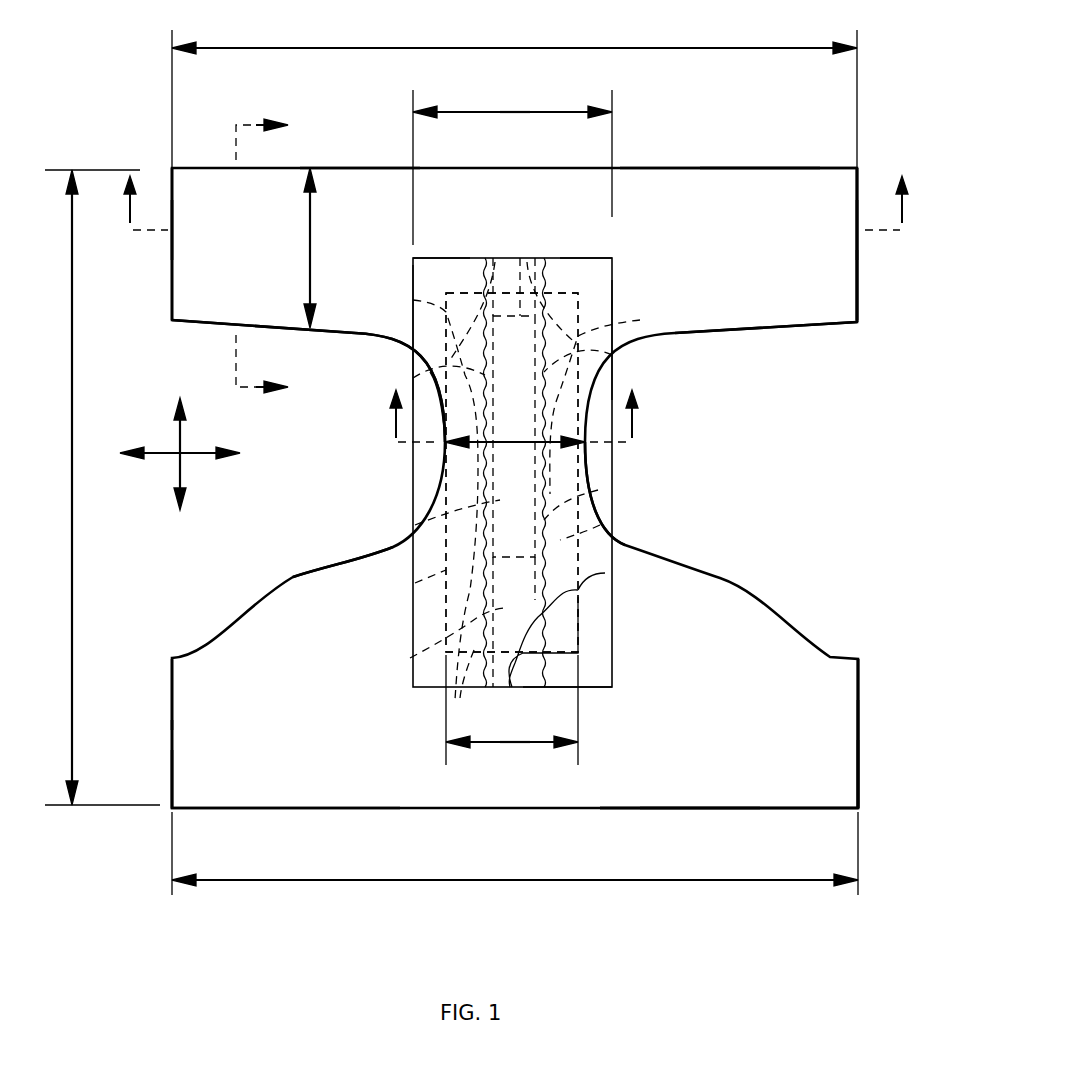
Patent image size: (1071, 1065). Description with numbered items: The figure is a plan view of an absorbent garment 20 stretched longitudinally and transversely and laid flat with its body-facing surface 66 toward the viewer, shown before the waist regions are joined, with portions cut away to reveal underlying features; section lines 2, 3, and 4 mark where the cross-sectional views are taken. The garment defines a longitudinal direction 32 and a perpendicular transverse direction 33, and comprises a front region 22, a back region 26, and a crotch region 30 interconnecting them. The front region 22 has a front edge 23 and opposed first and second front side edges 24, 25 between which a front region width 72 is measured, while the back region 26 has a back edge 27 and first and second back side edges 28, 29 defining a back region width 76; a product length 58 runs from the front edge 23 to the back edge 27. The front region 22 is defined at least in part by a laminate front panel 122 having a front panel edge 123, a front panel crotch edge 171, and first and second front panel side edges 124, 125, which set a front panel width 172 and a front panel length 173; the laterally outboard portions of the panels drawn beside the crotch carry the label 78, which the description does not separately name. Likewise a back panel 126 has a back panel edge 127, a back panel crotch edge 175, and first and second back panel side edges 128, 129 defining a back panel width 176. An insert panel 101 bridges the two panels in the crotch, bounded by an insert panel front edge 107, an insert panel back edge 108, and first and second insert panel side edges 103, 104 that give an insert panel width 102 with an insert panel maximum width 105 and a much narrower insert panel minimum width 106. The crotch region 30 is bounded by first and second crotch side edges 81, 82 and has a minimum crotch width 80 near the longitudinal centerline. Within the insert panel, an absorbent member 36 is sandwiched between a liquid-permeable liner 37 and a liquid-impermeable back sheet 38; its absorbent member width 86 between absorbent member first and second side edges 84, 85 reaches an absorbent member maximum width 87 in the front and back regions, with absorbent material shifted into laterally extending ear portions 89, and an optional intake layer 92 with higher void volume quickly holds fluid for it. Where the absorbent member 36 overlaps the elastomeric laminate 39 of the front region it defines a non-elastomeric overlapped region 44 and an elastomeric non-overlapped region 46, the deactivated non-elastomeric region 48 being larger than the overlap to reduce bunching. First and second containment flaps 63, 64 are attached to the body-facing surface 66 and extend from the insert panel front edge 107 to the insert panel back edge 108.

The line 2- 2 is at (512, 416).
The line 3- 3 is at (514, 203).
The line 4- 4 is at (262, 258).
The absorbent garment 20 is at (652, 130).
The front region 22 is at (875, 265).
The front edge 23 is at (727, 168).
The first front side edge 24 is at (170, 178).
The second front side edge 25 is at (860, 182).
The back region 26 is at (878, 724).
The back edge 27 is at (752, 810).
The first back side edge 28 is at (170, 758).
The second back side edge 29 is at (860, 738).
The crotch region 30 is at (702, 490).
The longitudinal direction 32 is at (172, 446).
The transverse direction 33 is at (190, 456).
The absorbent member 36 is at (600, 322).
The liner 37 is at (498, 590).
The back sheet 38 is at (613, 270).
The laminate 39 is at (380, 180).
The overlapped region 44 is at (527, 262).
The non-overlapped region 46 is at (378, 312).
The non-elastomeric region 48 is at (495, 262).
The product length 58 is at (76, 540).
The first containment flap 63 is at (442, 270).
The second containment flap 64 is at (598, 262).
The body-facing surface 66 is at (729, 754).
The front region width 72 is at (562, 44).
The back region width 76 is at (296, 884).
The ear panel 78 is at (262, 325).
The minimum crotch width 80 is at (456, 500).
The first crotch side edge 81 is at (444, 462).
The second crotch side edge 82 is at (590, 458).
The absorbent member first side edge 84 is at (415, 583).
The absorbent member second side edge 85 is at (605, 573).
The absorbent member width 86 is at (498, 742).
The absorbent member maximum width 87 is at (517, 742).
The ear portions 89 is at (413, 300).
The intake layer 92 is at (600, 525).
The insert panel 101 is at (430, 375).
The insert panel width 102 is at (466, 112).
The insert panel first side edge 103 is at (413, 280).
The insert panel second side edge 104 is at (613, 296).
The insert panel maximum width 105 is at (508, 112).
The insert panel minimum width 106 is at (420, 500).
The insert panel front edge 107 is at (472, 258).
The insert panel back edge 108 is at (597, 690).
The front panel 122 is at (838, 298).
The front panel edge 123 is at (772, 168).
The front panel first side edge 124 is at (170, 266).
The front panel second side edge 125 is at (862, 202).
The back panel 126 is at (846, 683).
The back panel edge 127 is at (668, 810).
The back panel first side edge 128 is at (170, 693).
The back panel second side edge 129 is at (860, 768).
The front panel crotch edge 171 is at (842, 356).
The front panel width 172 is at (562, 48).
The front panel length 173 is at (308, 262).
The back panel crotch edge 175 is at (598, 490).
The back panel width 176 is at (296, 880).